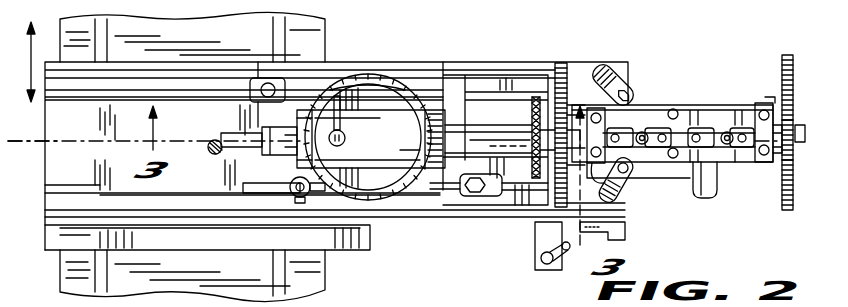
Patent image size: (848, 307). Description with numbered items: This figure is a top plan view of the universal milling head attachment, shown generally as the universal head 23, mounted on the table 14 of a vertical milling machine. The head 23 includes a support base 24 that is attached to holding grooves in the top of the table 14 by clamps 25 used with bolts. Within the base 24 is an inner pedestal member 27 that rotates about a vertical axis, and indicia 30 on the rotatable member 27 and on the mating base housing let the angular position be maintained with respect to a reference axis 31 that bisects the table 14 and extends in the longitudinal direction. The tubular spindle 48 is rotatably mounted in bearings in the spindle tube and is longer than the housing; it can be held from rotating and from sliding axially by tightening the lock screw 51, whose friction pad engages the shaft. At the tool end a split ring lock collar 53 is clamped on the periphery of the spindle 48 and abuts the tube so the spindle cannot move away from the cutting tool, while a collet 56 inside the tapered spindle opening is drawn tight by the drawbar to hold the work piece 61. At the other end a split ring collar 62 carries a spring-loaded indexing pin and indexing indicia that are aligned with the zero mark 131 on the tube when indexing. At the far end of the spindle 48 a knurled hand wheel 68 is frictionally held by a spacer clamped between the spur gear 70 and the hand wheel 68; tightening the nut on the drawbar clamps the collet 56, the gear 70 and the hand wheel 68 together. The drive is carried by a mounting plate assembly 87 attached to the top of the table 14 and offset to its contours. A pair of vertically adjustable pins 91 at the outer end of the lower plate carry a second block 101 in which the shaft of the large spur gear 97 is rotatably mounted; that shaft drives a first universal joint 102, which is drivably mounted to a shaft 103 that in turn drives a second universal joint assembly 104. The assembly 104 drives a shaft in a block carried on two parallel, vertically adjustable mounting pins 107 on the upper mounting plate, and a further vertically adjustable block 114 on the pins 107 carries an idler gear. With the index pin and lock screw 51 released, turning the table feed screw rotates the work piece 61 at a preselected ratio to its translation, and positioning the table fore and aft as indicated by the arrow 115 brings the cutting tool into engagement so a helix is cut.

The table 14 is at (258, 202).
The universal head 23 is at (418, 172).
The support base 24 is at (356, 78).
The clamps 25 is at (262, 80).
The inner pedestal member 27 is at (372, 188).
The indicia 30 is at (392, 86).
The reference axis 31 is at (58, 152).
The tubular spindle 48 is at (515, 125).
The lock screw 51 is at (350, 134).
The split ring lock collar 53 is at (302, 112).
The collet 56 is at (250, 157).
The work piece 61 is at (224, 140).
The split ring collar 62 is at (430, 108).
The knurled hand wheel 68 is at (536, 96).
The spur gear 70 is at (562, 62).
The mounting plate assembly 87 is at (706, 176).
The vertically adjustable pins 91 is at (764, 120).
The large spur gear 97 is at (796, 190).
The second block 101 is at (780, 105).
The first universal joint 102 is at (720, 124).
The shaft 103 is at (680, 128).
The second universal joint assembly 104 is at (634, 134).
The mounting pins 107 is at (596, 112).
The vertically adjustable block 114 is at (628, 194).
The arrow 115 is at (26, 62).
The zero mark 131 is at (420, 140).